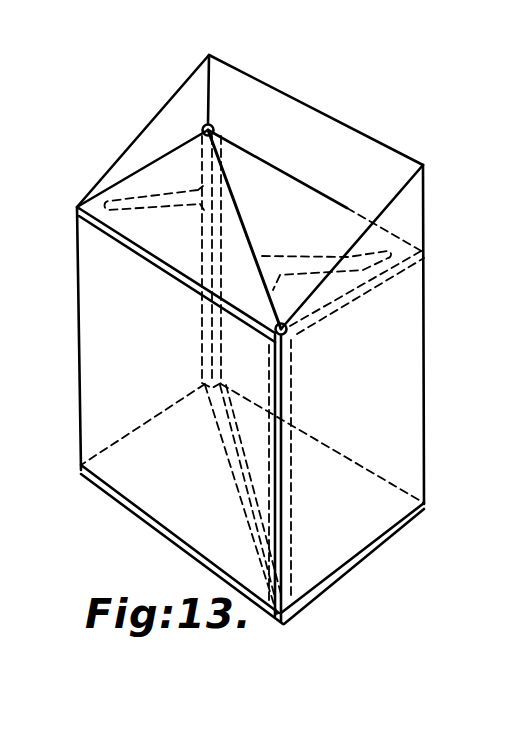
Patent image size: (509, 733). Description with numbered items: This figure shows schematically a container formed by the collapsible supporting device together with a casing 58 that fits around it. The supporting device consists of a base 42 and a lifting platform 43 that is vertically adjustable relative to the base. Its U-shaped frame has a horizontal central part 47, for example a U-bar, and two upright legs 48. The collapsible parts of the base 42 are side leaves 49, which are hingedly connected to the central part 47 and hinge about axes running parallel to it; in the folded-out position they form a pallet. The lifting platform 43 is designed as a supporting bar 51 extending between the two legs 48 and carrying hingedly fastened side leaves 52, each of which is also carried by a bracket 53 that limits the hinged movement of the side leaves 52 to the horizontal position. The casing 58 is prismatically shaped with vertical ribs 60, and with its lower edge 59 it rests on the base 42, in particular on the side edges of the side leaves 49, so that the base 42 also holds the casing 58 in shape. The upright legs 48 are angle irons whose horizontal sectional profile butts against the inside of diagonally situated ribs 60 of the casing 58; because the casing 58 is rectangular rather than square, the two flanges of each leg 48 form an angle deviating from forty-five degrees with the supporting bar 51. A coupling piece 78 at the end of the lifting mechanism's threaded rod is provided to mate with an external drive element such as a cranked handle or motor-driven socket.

The base 42 is at (132, 518).
The lifting platform 43 is at (248, 198).
The central part 47 is at (232, 474).
The upright legs 48 is at (212, 126).
The side leaves 49 is at (159, 446).
The supporting bar 51 is at (252, 233).
The side leaves 52 is at (156, 244).
The bracket 53 is at (133, 200).
The casing 58 is at (403, 380).
The lower edge 59 is at (388, 534).
The vertical ribs 60 is at (428, 451).
The coupling piece 78 is at (297, 328).